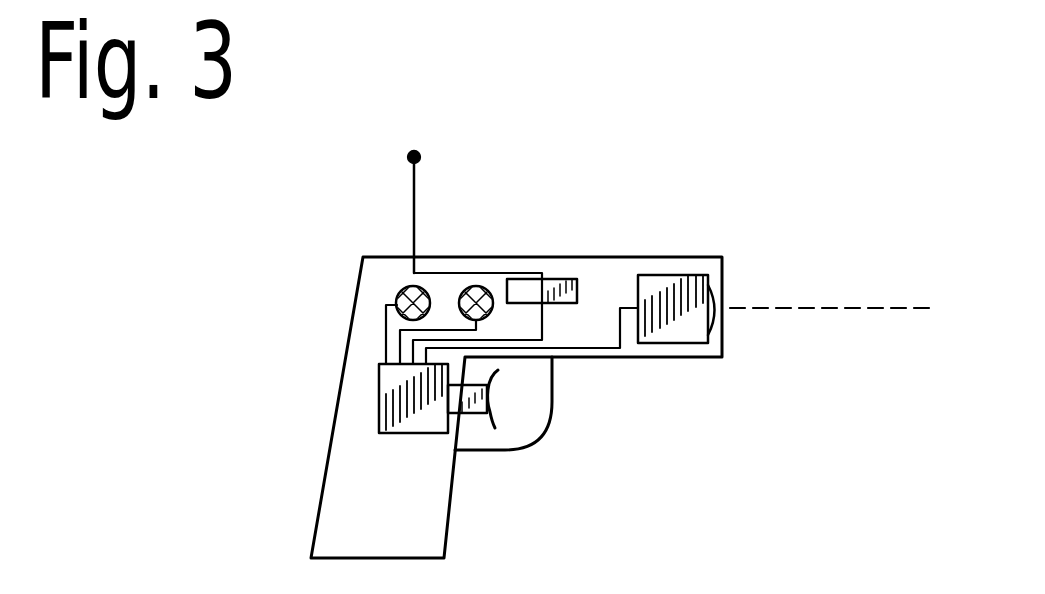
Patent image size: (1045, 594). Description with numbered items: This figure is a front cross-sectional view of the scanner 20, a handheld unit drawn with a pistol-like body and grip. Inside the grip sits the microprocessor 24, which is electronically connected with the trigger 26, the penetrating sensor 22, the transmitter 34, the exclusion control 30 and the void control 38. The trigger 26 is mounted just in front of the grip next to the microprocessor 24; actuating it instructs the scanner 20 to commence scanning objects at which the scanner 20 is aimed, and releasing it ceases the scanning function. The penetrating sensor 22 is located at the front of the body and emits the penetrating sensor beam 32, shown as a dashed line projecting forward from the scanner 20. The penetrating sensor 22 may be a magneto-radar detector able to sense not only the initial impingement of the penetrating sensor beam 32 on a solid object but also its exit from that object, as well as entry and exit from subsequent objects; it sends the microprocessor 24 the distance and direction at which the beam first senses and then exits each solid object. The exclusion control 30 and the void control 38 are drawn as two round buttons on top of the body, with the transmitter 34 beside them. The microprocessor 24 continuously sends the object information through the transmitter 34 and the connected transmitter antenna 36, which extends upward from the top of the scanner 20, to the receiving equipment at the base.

The scanner 20 is at (130, 289).
The penetrating sensor 22 is at (683, 344).
The microprocessor 24 is at (379, 398).
The trigger 26 is at (492, 423).
The exclusion control 30 is at (396, 299).
The penetrating sensor beam 32 is at (823, 308).
The transmitter 34 is at (577, 292).
The transmitter antenna 36 is at (414, 185).
The void control 38 is at (463, 288).